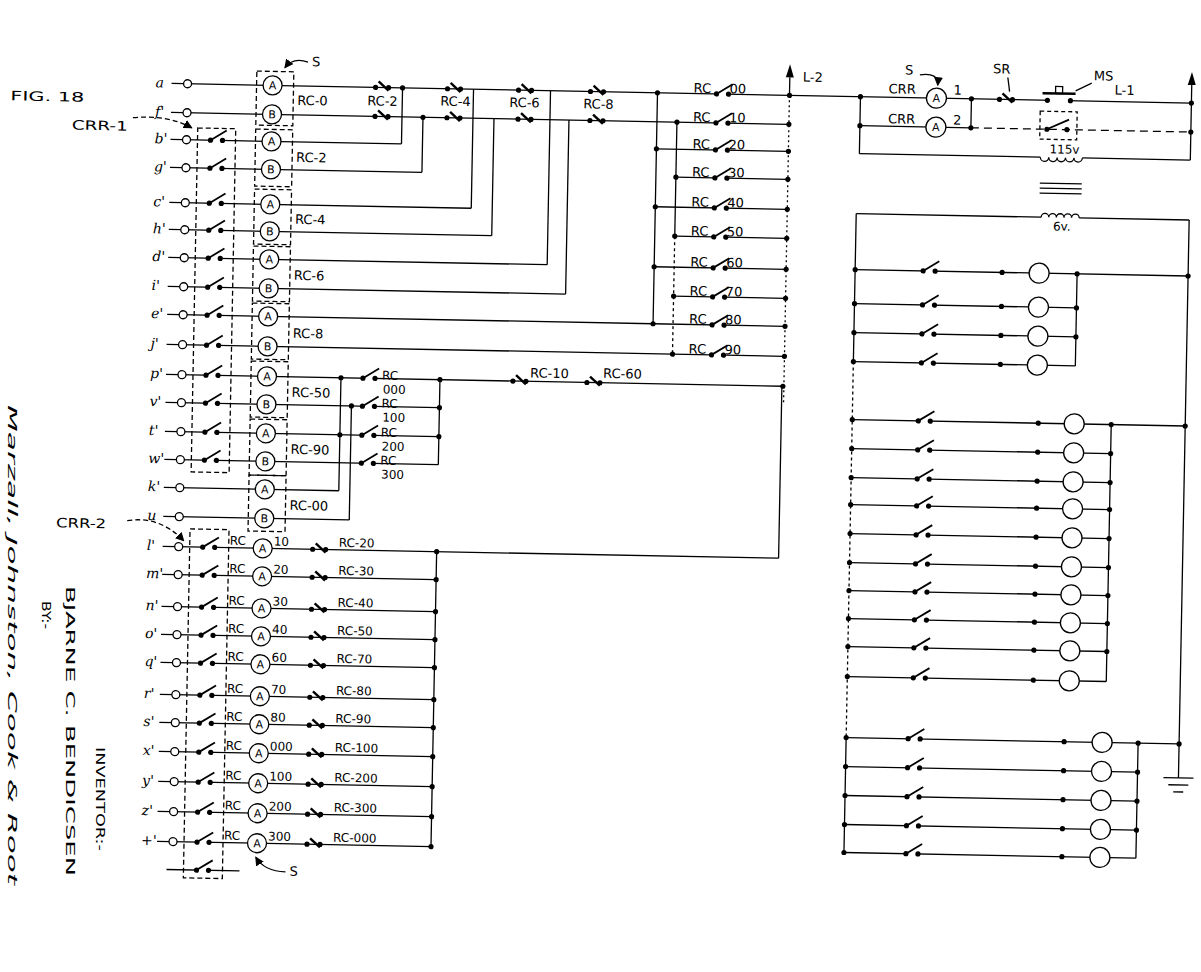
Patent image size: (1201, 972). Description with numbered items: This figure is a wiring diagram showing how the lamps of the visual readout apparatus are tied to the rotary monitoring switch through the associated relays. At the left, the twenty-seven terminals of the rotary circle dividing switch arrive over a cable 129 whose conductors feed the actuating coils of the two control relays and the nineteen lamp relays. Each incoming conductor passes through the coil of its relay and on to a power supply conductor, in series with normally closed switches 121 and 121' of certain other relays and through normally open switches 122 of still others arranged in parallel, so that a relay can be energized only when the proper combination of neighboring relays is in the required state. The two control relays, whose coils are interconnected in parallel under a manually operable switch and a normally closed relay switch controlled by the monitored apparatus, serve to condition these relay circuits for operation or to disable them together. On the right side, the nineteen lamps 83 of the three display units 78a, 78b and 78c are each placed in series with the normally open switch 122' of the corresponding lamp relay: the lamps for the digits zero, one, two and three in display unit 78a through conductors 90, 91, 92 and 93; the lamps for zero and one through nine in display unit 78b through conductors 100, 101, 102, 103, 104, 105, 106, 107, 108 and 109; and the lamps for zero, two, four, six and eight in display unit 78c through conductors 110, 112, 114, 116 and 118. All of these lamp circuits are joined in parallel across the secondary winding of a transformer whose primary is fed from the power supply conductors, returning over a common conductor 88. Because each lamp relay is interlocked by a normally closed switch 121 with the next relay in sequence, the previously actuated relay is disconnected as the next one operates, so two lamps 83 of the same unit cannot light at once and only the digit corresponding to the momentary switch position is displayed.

The cable 129 is at (167, 76).
The normally closed switch 121 is at (449, 467).
The normally closed switch 121' is at (493, 131).
The normally open switch 122 is at (463, 468).
The normally open switch 122' is at (949, 544).
The lamps 83 is at (1038, 247).
The common return conductor 88 is at (1183, 249).
The display unit 78a is at (1020, 310).
The display unit 78b is at (1015, 543).
The display unit 78c is at (1010, 789).
The lamp energizing conductor 90 is at (978, 259).
The lamp energizing conductor 91 is at (978, 293).
The lamp energizing conductor 92 is at (978, 322).
The lamp energizing conductor 93 is at (978, 351).
The lamp energizing conductor 100 is at (982, 409).
The lamp energizing conductor 101 is at (982, 438).
The lamp energizing conductor 102 is at (982, 467).
The lamp energizing conductor 103 is at (982, 494).
The lamp energizing conductor 104 is at (982, 523).
The lamp energizing conductor 105 is at (982, 552).
The lamp energizing conductor 106 is at (982, 580).
The lamp energizing conductor 107 is at (982, 608).
The lamp energizing conductor 108 is at (982, 636).
The lamp energizing conductor 109 is at (982, 666).
The lamp energizing conductor 110 is at (989, 727).
The lamp energizing conductor 112 is at (989, 756).
The lamp energizing conductor 114 is at (989, 785).
The lamp energizing conductor 116 is at (989, 814).
The lamp energizing conductor 118 is at (989, 842).